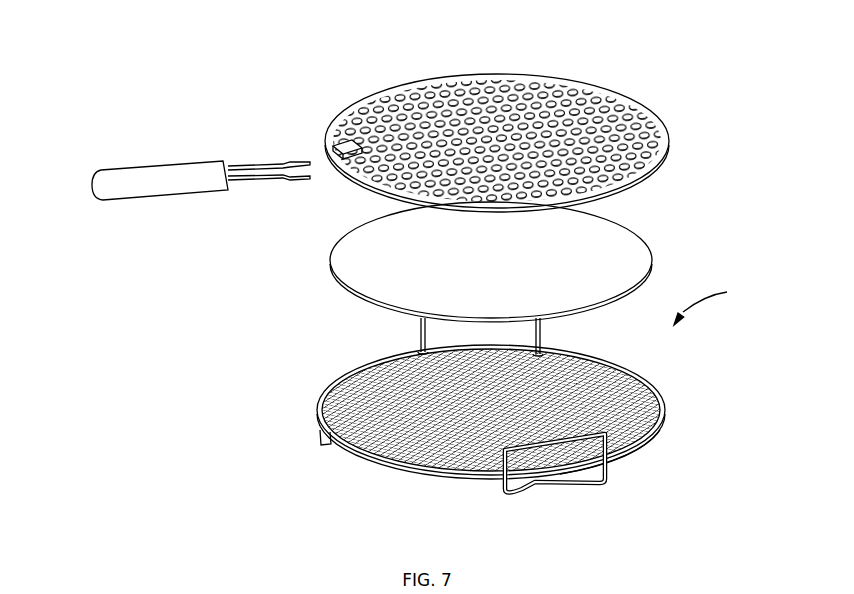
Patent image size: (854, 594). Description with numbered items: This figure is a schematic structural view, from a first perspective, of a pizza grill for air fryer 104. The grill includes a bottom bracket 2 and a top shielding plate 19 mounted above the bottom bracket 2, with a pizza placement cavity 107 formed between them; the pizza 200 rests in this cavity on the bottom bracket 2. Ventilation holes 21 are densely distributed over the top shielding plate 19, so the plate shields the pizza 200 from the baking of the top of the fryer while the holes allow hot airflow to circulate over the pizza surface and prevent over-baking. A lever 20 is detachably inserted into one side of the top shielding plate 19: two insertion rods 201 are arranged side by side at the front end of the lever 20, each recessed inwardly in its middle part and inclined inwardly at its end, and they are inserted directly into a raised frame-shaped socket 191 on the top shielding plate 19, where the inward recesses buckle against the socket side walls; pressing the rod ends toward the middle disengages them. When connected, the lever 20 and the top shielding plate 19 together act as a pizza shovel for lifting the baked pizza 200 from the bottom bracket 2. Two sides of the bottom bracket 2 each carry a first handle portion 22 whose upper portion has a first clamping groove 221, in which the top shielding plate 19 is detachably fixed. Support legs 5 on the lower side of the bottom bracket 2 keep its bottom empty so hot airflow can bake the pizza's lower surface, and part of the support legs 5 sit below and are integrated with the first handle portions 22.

The pizza grill for air fryer 104 is at (503, 29).
The top shielding plate 19 is at (658, 152).
The ventilation hole 21 is at (623, 113).
The frame-shaped socket 191 is at (337, 144).
The lever 20 is at (150, 185).
The insertion rod 201 is at (300, 162).
The pizza 200 is at (648, 246).
The first handle portion 22 is at (545, 336).
The bottom bracket 2 is at (640, 392).
The first clamping groove 221 is at (625, 447).
The support leg 5 is at (605, 484).
The pizza placement cavity 107 is at (717, 301).